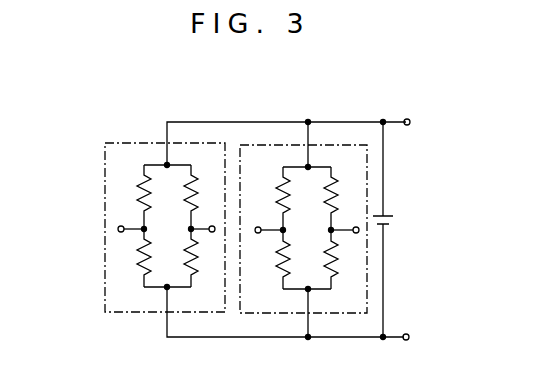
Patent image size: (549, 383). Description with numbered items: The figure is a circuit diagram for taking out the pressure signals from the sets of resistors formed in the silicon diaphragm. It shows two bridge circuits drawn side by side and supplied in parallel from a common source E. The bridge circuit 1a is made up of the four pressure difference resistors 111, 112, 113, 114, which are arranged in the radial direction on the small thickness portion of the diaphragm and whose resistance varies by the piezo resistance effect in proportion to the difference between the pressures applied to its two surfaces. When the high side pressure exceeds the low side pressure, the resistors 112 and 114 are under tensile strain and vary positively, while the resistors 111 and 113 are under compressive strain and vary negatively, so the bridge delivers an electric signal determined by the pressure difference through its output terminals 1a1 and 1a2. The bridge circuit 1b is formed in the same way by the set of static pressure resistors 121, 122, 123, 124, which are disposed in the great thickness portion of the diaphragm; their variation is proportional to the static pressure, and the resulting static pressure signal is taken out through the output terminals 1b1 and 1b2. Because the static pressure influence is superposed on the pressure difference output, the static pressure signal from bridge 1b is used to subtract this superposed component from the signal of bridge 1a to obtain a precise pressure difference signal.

The bridge circuit 1a is at (290, 145).
The bridge circuit 1b is at (126, 142).
The pressure difference resistor 111 is at (272, 190).
The pressure difference resistor 112 is at (278, 267).
The pressure difference resistor 113 is at (340, 190).
The pressure difference resistor 114 is at (337, 272).
The static pressure resistor 121 is at (140, 190).
The static pressure resistor 122 is at (197, 268).
The static pressure resistor 123 is at (197, 188).
The static pressure resistor 124 is at (140, 252).
The output terminal 1a1 is at (264, 219).
The output terminal 1a2 is at (351, 219).
The output terminal 1b1 is at (127, 219).
The output terminal 1b2 is at (211, 219).
The power source E is at (390, 220).